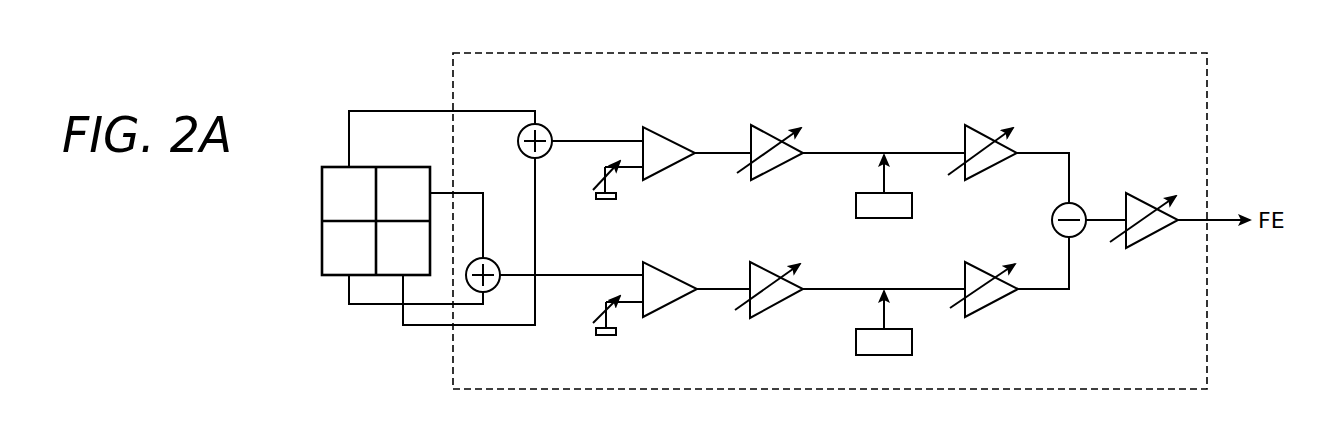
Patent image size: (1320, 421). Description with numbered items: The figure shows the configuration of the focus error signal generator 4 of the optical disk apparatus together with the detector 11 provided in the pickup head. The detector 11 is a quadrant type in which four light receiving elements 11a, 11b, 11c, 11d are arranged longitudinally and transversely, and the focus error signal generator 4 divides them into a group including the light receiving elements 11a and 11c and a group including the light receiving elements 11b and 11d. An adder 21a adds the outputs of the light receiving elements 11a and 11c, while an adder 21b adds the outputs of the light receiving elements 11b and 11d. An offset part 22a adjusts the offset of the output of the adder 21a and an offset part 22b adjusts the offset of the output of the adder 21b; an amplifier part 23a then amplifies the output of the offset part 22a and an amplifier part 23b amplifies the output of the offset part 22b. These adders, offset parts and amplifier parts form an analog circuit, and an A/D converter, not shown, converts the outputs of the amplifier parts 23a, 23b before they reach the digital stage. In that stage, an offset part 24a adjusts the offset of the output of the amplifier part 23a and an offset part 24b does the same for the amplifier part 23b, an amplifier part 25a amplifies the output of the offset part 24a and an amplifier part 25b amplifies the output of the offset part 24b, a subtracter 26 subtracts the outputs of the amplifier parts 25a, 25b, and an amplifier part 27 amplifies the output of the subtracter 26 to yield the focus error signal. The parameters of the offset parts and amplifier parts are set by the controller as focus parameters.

The focus error signal generator 4 is at (1143, 53).
The detector 11 is at (393, 167).
The light receiving element 11a is at (349, 194).
The light receiving element 11b is at (403, 194).
The light receiving element 11c is at (403, 248).
The light receiving element 11d is at (349, 248).
The adder 21a is at (548, 126).
The adder 21b is at (497, 262).
The offset part 22a is at (666, 129).
The offset part 22b is at (668, 263).
The amplifier part 23a is at (773, 134).
The amplifier part 23b is at (775, 269).
The offset part 24a is at (857, 196).
The offset part 24b is at (857, 332).
The amplifier part 25a is at (988, 134).
The amplifier part 25b is at (988, 269).
The subtracter 26 is at (1083, 207).
The amplifier part 27 is at (1149, 198).